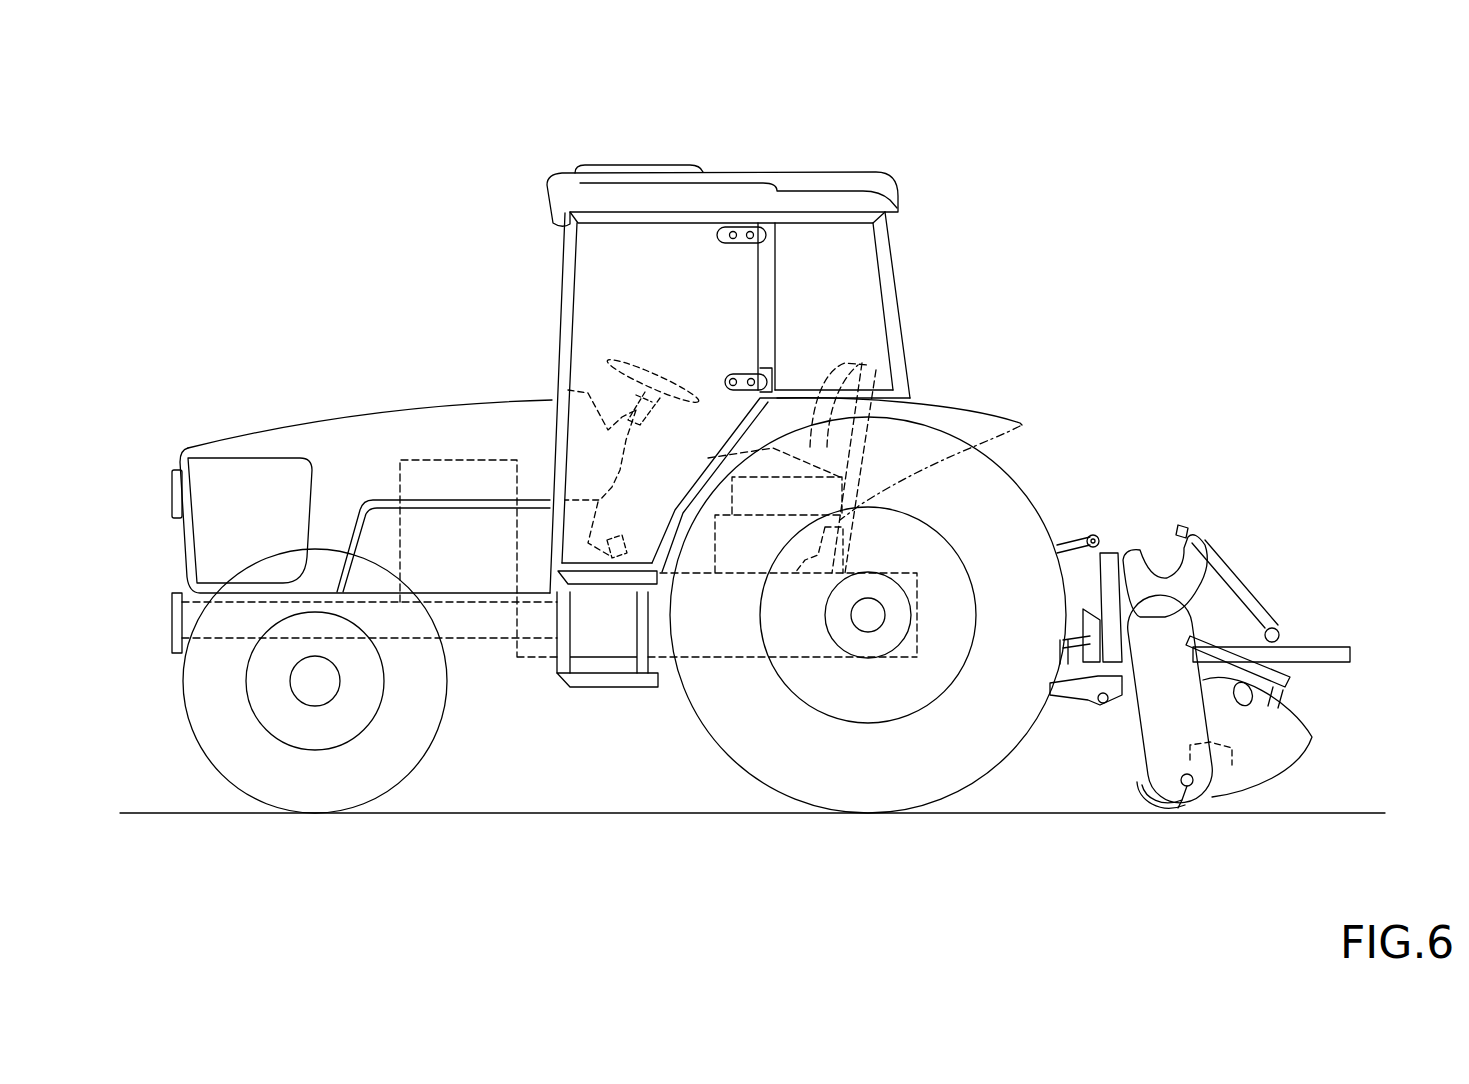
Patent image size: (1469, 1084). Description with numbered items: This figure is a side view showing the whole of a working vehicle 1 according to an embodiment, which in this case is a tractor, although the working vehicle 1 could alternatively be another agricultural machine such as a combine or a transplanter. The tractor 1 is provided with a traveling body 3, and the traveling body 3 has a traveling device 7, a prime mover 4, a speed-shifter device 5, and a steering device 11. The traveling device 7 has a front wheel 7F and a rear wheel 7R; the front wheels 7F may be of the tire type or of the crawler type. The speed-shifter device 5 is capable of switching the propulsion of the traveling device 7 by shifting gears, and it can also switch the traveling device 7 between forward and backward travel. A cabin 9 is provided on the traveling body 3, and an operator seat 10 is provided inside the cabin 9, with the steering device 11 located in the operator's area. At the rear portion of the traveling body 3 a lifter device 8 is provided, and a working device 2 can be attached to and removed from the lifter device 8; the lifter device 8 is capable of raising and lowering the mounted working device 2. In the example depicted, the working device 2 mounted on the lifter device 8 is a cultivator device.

The working vehicle 1 is at (990, 121).
The working device 2 is at (1253, 544).
The traveling body 3 is at (488, 658).
The prime mover 4 is at (525, 540).
The speed-shifter device 5 is at (663, 637).
The traveling device 7 is at (912, 893).
The front wheel 7F is at (368, 788).
The rear wheel 7R is at (868, 790).
The lifter device 8 is at (1068, 525).
The cabin 9 is at (898, 300).
The operator seat 10 is at (863, 365).
The steering device 11 is at (640, 358).